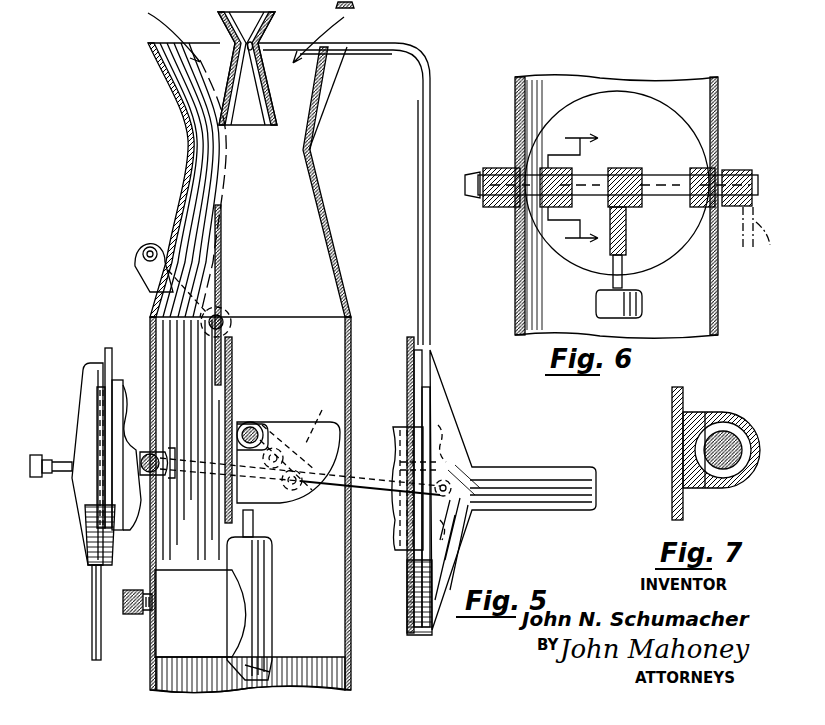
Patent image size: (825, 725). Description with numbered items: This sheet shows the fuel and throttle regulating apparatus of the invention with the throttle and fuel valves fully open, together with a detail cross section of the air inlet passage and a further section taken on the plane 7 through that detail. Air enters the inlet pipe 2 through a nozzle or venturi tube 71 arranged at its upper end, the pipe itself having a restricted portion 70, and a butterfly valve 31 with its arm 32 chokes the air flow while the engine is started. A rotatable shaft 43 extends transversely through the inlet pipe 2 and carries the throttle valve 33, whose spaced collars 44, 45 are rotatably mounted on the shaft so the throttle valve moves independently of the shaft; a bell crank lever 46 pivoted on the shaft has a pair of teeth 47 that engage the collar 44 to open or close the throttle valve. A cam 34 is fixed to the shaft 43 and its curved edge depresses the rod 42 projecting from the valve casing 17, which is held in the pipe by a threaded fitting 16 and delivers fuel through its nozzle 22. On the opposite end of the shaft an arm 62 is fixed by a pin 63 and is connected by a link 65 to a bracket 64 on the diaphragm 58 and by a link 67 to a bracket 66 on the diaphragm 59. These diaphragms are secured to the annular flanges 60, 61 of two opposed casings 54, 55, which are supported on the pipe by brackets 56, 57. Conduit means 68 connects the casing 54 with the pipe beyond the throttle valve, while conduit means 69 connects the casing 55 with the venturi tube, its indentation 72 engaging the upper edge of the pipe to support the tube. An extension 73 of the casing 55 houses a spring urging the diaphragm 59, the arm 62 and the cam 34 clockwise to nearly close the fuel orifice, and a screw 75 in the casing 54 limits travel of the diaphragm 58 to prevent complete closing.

In FIG. 5, the air inlet pipe 2 is at (350, 322).
In FIG. 6, the air inlet pipe 2 is at (715, 100).
In FIG. 6, the section line 7— 7 is at (573, 191).
In FIG. 5, the threaded fitting 16 is at (133, 617).
In FIG. 5, the valve casing 17 is at (212, 668).
In FIG. 6, the valve casing 17 is at (598, 308).
In FIG. 5, the nozzle 22 is at (268, 676).
In FIG. 5, the butterfly valve 31 is at (222, 215).
In FIG. 5, the arm 32 is at (155, 240).
In FIG. 5, the throttle valve 33 is at (232, 372).
In FIG. 6, the throttle valve 33 is at (630, 96).
In FIG. 7, the throttle valve 33 is at (672, 455).
In FIG. 5, the cam 34 is at (282, 505).
In FIG. 6, the cam 34 is at (628, 232).
In FIG. 5, the rod 42 is at (265, 532).
In FIG. 6, the rod 42 is at (625, 282).
In FIG. 5, the rotatable shaft 43 is at (256, 425).
In FIG. 6, the rotatable shaft 43 is at (642, 176).
In FIG. 7, the rotatable shaft 43 is at (742, 462).
In FIG. 6, the collar 44 is at (565, 172).
In FIG. 7, the collar 44 is at (738, 420).
In FIG. 6, the collar 45 is at (692, 176).
In FIG. 5, the bell crank lever 46 is at (358, 3).
In FIG. 6, the bell crank lever 46 is at (497, 208).
In FIG. 7, the teeth 47 is at (715, 420).
In FIG. 5, the casing 54 is at (85, 363).
In FIG. 5, the casing 55 is at (455, 427).
In FIG. 5, the bracket 56 is at (114, 508).
In FIG. 5, the bracket 57 is at (405, 553).
In FIG. 5, the diaphragm 58 is at (128, 385).
In FIG. 5, the diaphragm 59 is at (462, 518).
In FIG. 5, the annular flange 60 is at (108, 350).
In FIG. 5, the annular flange 61 is at (409, 340).
In FIG. 5, the arm 62 is at (318, 412).
In FIG. 6, the arm 62 is at (762, 240).
In FIG. 6, the pin 63 is at (737, 170).
In FIG. 5, the bracket 64 is at (155, 456).
In FIG. 5, the link 65 is at (162, 470).
In FIG. 5, the bracket 66 is at (395, 516).
In FIG. 5, the link 67 is at (372, 484).
In FIG. 5, the conduit means 68 is at (90, 637).
In FIG. 5, the conduit means 69 is at (432, 108).
In FIG. 5, the restricted portion 70 is at (187, 146).
In FIG. 5, the venturi tube 71 is at (233, 36).
In FIG. 5, the indentation 72 is at (343, 53).
In FIG. 5, the extension 73 is at (520, 467).
In FIG. 5, the screw 75 is at (36, 455).